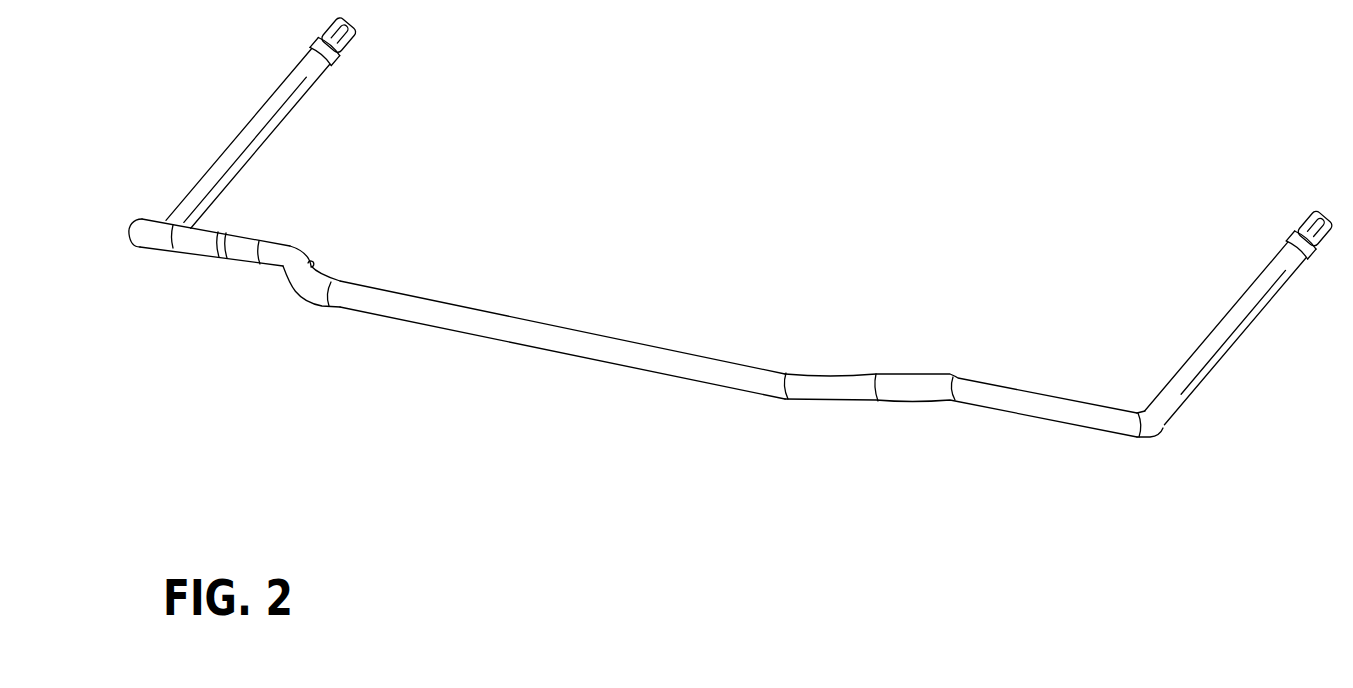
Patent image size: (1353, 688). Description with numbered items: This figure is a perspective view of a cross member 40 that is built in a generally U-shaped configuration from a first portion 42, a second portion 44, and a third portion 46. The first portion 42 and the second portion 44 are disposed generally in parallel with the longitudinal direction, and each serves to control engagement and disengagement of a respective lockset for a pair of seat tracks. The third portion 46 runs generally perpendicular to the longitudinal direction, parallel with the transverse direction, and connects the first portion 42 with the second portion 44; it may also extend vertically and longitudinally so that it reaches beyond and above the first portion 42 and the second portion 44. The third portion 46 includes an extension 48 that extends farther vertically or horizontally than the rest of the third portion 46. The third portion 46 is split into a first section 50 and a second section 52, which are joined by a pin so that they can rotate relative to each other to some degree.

The cross member 40 is at (732, 254).
The first portion 42 is at (317, 92).
The second portion 44 is at (1285, 292).
The third portion 46 is at (751, 387).
The extension 48 is at (450, 322).
The first section 50 is at (217, 220).
The second section 52 is at (285, 251).